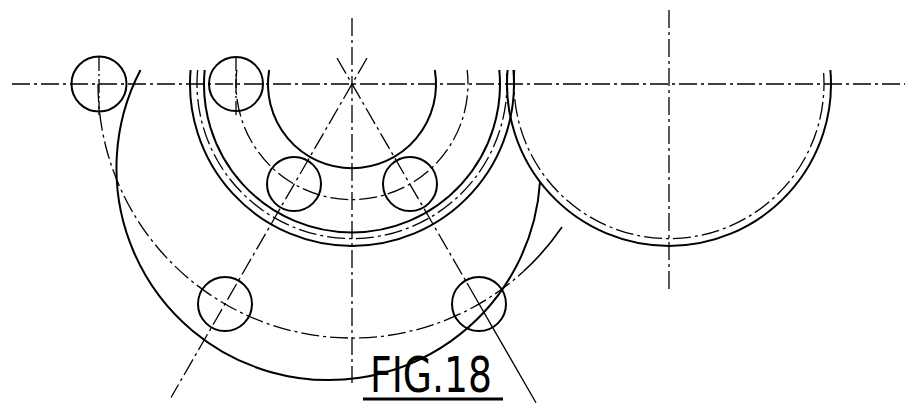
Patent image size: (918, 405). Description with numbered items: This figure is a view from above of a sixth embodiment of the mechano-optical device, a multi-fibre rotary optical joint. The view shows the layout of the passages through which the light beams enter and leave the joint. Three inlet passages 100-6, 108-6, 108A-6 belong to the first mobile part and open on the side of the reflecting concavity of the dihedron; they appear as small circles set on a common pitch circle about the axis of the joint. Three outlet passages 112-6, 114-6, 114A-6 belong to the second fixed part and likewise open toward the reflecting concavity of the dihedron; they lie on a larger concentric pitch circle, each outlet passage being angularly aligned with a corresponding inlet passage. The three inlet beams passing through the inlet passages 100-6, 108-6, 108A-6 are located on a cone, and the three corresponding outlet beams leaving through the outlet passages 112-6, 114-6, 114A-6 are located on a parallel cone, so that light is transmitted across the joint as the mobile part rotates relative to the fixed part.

The outlet passage 112-6 is at (85, 62).
The inlet passage 100-6 is at (235, 33).
The inlet passage 108-6 is at (294, 166).
The inlet passage 108A-6 is at (413, 165).
The outlet passage 114-6 is at (207, 318).
The outlet passage 114A-6 is at (499, 318).